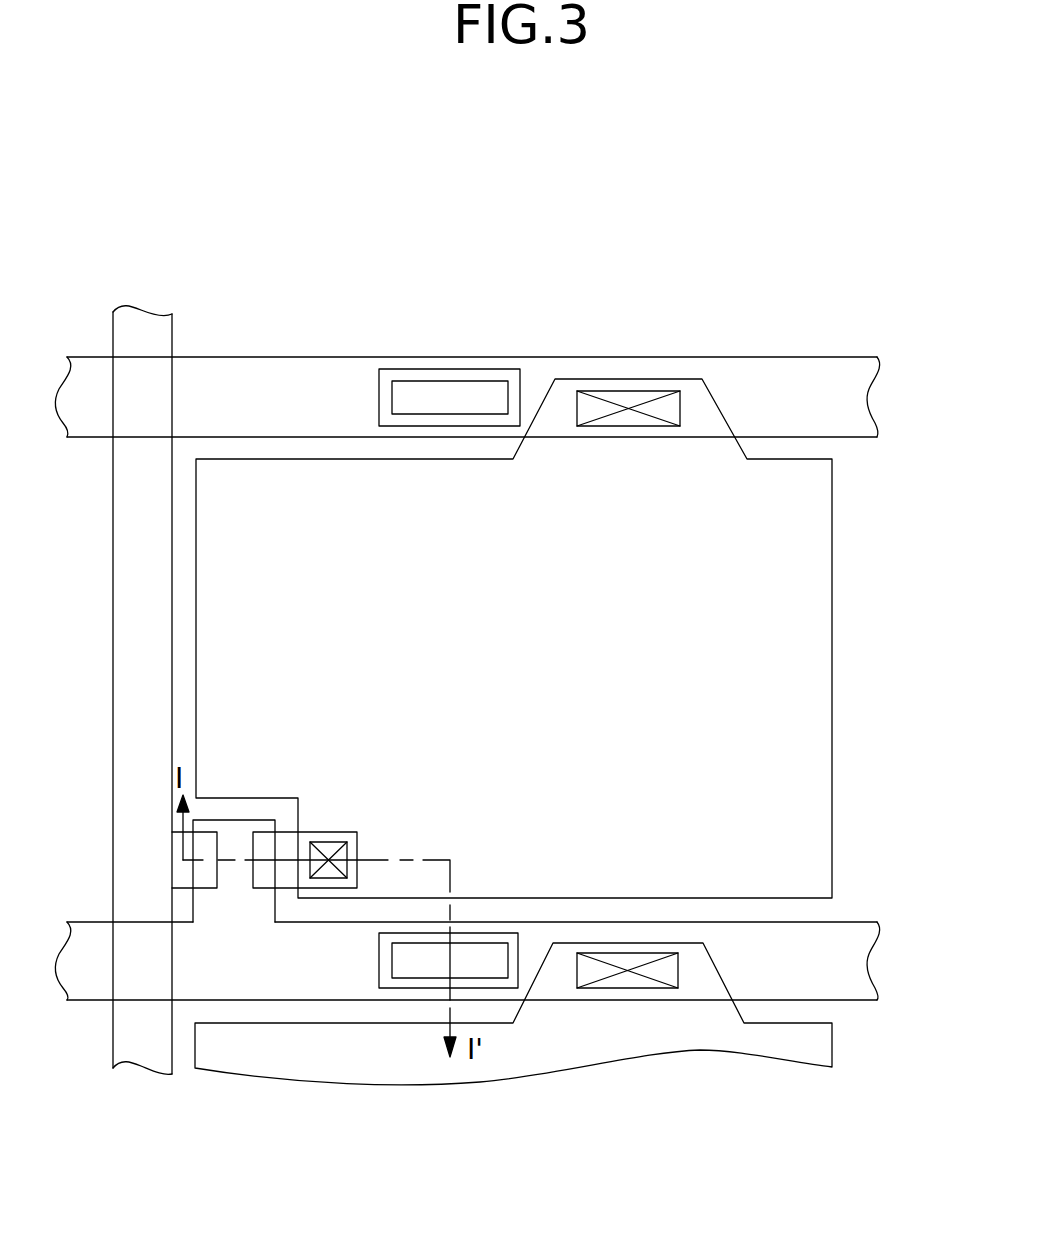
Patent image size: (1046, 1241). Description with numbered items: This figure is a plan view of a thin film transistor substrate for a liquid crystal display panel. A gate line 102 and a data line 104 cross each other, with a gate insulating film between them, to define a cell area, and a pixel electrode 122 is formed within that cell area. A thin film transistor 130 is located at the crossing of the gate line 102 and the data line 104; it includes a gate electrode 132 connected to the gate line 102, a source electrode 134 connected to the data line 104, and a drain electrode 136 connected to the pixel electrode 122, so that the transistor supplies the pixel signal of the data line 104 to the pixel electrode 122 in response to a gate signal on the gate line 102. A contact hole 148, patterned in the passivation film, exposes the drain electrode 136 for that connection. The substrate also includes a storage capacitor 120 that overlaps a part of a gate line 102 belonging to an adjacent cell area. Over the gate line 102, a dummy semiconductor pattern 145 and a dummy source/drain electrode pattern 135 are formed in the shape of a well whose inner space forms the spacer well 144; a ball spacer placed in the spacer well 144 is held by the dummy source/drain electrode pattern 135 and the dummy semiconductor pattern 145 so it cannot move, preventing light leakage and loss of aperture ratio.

The gate line 102 is at (857, 965).
The data line 104 is at (158, 333).
The storage capacitor 120 is at (667, 340).
The pixel electrode 122 is at (826, 697).
The thin film transistor 130 is at (311, 860).
The gate electrode 132 is at (235, 820).
The source electrode 134 is at (210, 886).
The dummy source/drain electrode pattern 135 is at (442, 988).
The drain electrode 136 is at (330, 882).
The spacer well 144 is at (420, 963).
The dummy semiconductor pattern 145 is at (414, 1044).
The contact hole 148 is at (327, 840).